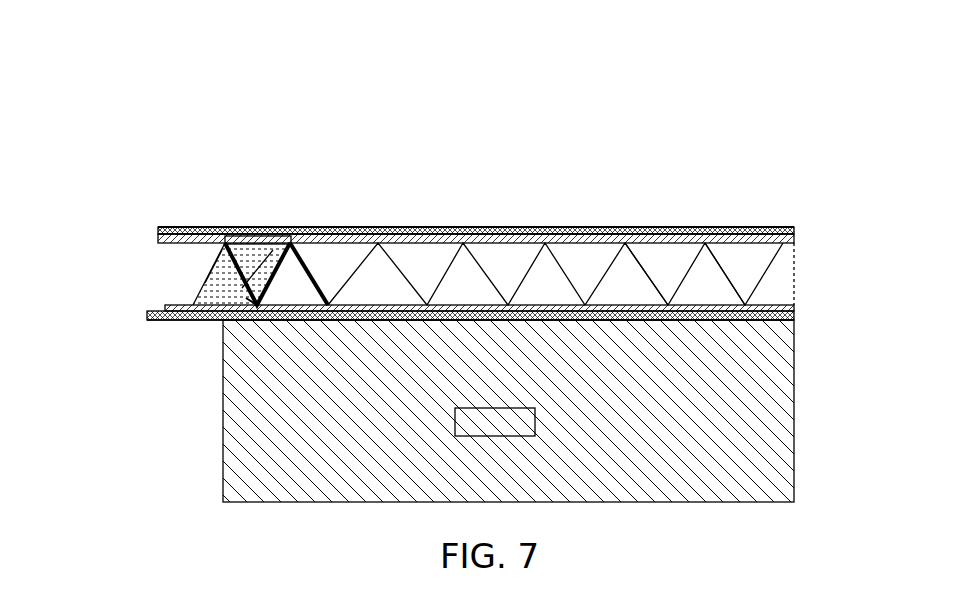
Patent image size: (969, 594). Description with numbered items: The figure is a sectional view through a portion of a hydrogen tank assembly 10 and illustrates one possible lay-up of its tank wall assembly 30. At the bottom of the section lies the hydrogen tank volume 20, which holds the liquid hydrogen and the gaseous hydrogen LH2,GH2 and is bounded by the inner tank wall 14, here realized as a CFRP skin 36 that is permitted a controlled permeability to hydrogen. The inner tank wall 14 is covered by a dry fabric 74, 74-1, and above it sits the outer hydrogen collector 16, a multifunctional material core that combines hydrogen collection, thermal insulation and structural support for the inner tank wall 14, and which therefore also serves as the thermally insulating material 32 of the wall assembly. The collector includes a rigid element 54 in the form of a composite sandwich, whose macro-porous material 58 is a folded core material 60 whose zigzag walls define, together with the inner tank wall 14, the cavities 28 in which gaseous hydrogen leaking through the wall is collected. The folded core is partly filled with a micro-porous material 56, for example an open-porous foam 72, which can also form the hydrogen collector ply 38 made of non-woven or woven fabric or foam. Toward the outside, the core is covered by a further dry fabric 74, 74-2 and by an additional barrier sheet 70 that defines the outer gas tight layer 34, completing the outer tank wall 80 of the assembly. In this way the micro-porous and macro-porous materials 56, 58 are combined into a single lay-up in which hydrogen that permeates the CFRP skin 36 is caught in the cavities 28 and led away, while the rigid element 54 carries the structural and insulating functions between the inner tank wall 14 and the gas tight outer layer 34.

The hydrogen tank assembly 10 is at (278, 72).
The inner tank wall 14 is at (182, 319).
The outer hydrogen collector 16 is at (543, 305).
The hydrogen tank volume 20 is at (508, 411).
The cavity 28 is at (240, 293).
The tank wall assembly 30 is at (597, 245).
The thermally insulating material 32 is at (240, 227).
The gas tight layer 34 is at (200, 233).
The CFRP skin 36 is at (648, 320).
The hydrogen collector ply 38 is at (195, 287).
The rigid element 54 is at (653, 265).
The micro-porous material 56 is at (228, 277).
The macro-porous material 58 is at (208, 253).
The folded core material 60 is at (720, 265).
The barrier sheet 70 is at (442, 197).
The open-porous foam 72 is at (245, 294).
The dry fabric 74 is at (443, 228).
The dry fabric 74-1 is at (280, 322).
The dry fabric 74-2 is at (463, 243).
The outer tank wall 80 is at (578, 227).
The liquid hydrogen and gaseous hydrogen LH2,GH2 is at (573, 452).